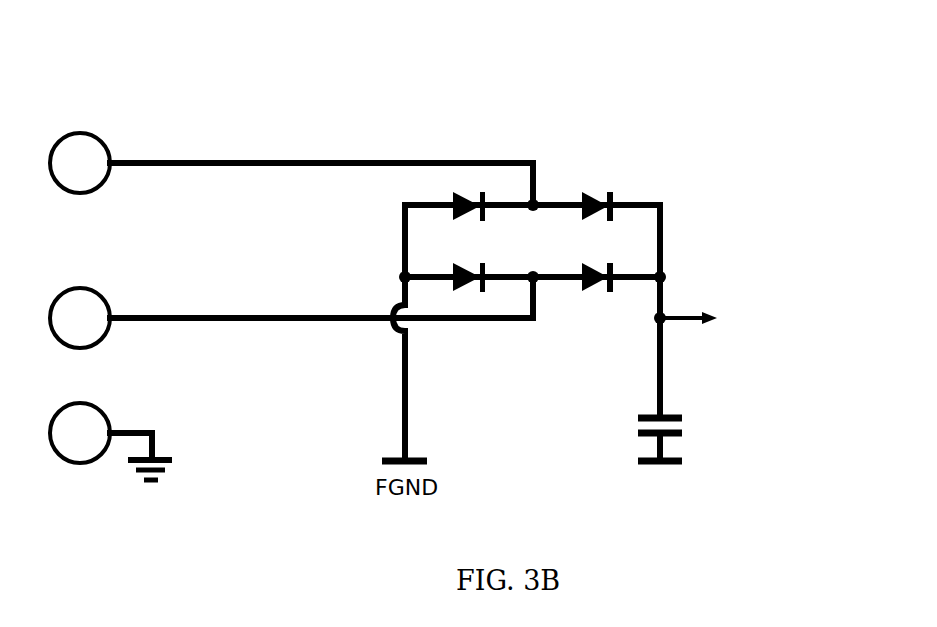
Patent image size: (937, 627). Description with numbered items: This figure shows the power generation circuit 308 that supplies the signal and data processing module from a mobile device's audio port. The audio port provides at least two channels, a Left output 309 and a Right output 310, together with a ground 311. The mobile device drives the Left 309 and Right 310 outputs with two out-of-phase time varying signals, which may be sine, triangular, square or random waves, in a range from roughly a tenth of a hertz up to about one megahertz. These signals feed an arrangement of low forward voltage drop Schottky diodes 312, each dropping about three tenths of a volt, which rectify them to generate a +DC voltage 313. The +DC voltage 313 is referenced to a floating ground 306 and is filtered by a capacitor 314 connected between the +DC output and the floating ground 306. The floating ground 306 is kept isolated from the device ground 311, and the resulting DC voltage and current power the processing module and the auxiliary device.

The floating ground 306 is at (703, 490).
The power supply circuit 308 is at (345, 89).
The Left output 309 is at (103, 128).
The Right output 310 is at (127, 300).
The ground 311 is at (163, 484).
The Schottky diodes 312 is at (480, 187).
The +DC voltage 313 is at (750, 290).
The capacitor 314 is at (693, 405).